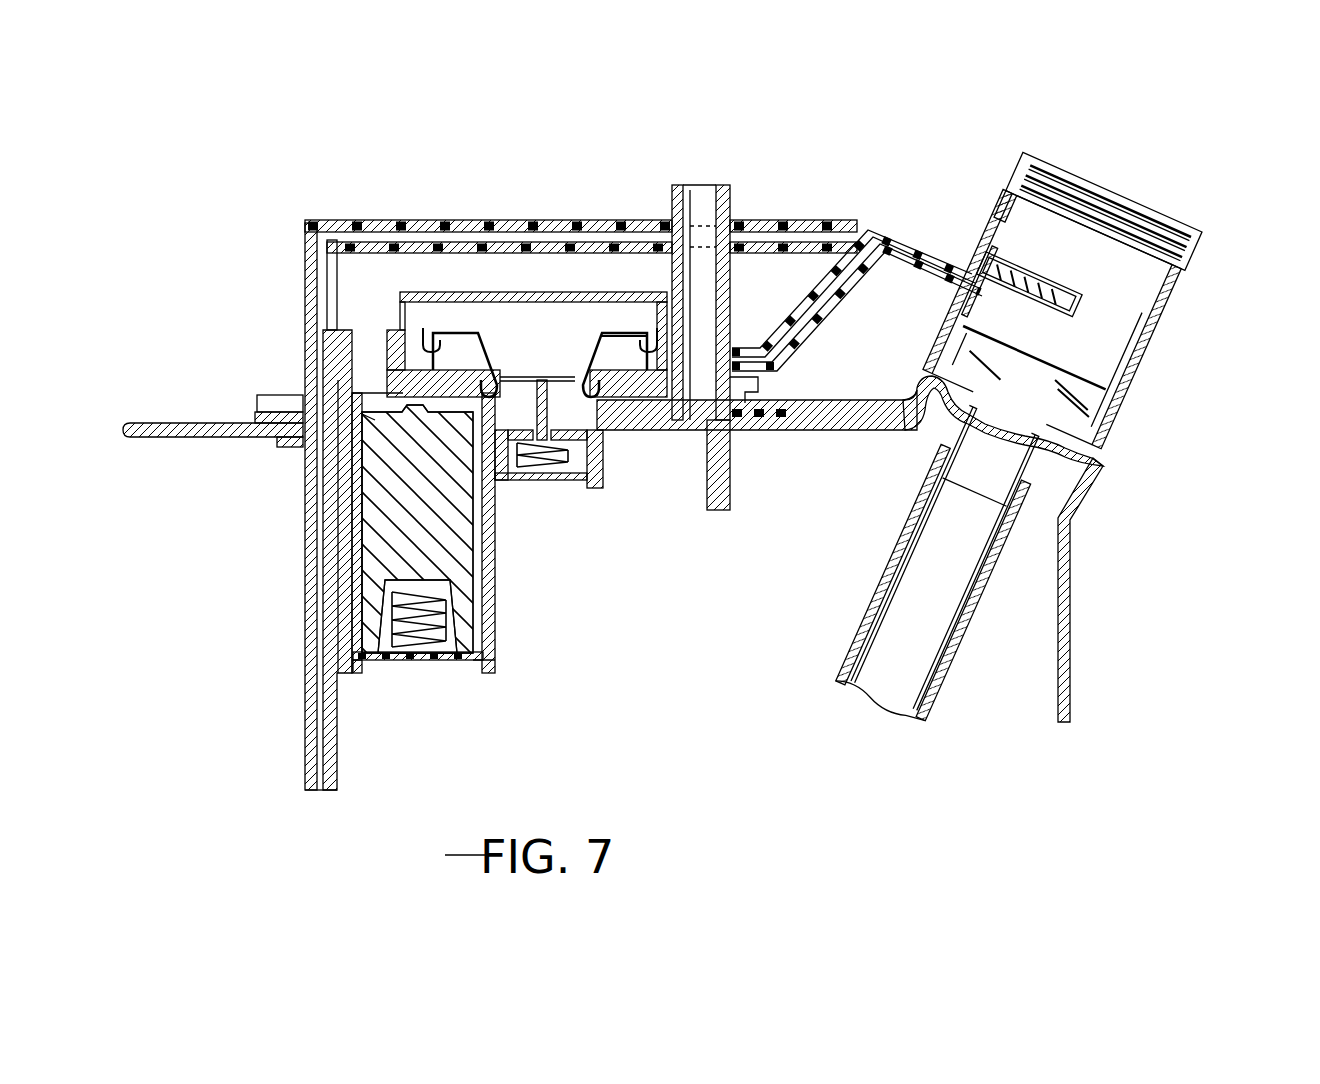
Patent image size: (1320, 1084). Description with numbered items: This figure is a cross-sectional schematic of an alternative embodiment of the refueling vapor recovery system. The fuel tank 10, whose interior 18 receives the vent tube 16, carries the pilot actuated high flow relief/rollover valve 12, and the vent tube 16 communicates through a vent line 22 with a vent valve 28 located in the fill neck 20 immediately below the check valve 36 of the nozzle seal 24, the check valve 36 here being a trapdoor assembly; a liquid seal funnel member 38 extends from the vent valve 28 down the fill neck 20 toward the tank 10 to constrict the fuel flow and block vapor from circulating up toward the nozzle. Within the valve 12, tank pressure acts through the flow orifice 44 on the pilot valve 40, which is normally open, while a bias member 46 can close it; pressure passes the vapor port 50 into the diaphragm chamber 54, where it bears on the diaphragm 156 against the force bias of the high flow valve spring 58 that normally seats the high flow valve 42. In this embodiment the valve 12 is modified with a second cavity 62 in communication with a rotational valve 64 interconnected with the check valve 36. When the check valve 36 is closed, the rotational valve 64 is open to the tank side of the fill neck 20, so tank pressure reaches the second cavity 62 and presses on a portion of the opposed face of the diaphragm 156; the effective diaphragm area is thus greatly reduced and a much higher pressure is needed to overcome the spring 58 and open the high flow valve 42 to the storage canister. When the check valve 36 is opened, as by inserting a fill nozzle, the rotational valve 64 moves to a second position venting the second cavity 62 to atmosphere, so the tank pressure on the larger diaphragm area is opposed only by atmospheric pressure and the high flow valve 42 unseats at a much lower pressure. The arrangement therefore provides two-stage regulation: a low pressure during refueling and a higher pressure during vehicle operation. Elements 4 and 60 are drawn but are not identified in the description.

The plunger 4 is at (510, 533).
The fuel tank 10 is at (173, 438).
The tank pressure relief/rollover valve 12 is at (510, 617).
The vent tube 16 is at (302, 718).
The interior 18 is at (748, 629).
The fill neck 20 is at (960, 647).
The vent line 22 is at (430, 232).
The nozzle seal 24 is at (1178, 268).
The vent valve 28 is at (923, 287).
The check valve 36 is at (1133, 346).
The liquid seal funnel member 38 is at (1080, 397).
The pilot valve 40 is at (556, 408).
The high flow valve 42 is at (358, 424).
The flow orifice 44 is at (425, 660).
The bias member 46 is at (398, 648).
The vapor port 50 is at (410, 356).
The diaphragm chamber 54 is at (530, 300).
The high flow valve spring 58 is at (570, 462).
The pressure plate 60 is at (555, 378).
The second cavity 62 is at (470, 352).
The rotational valve 64 is at (1048, 265).
The diaphragm 156 is at (617, 333).